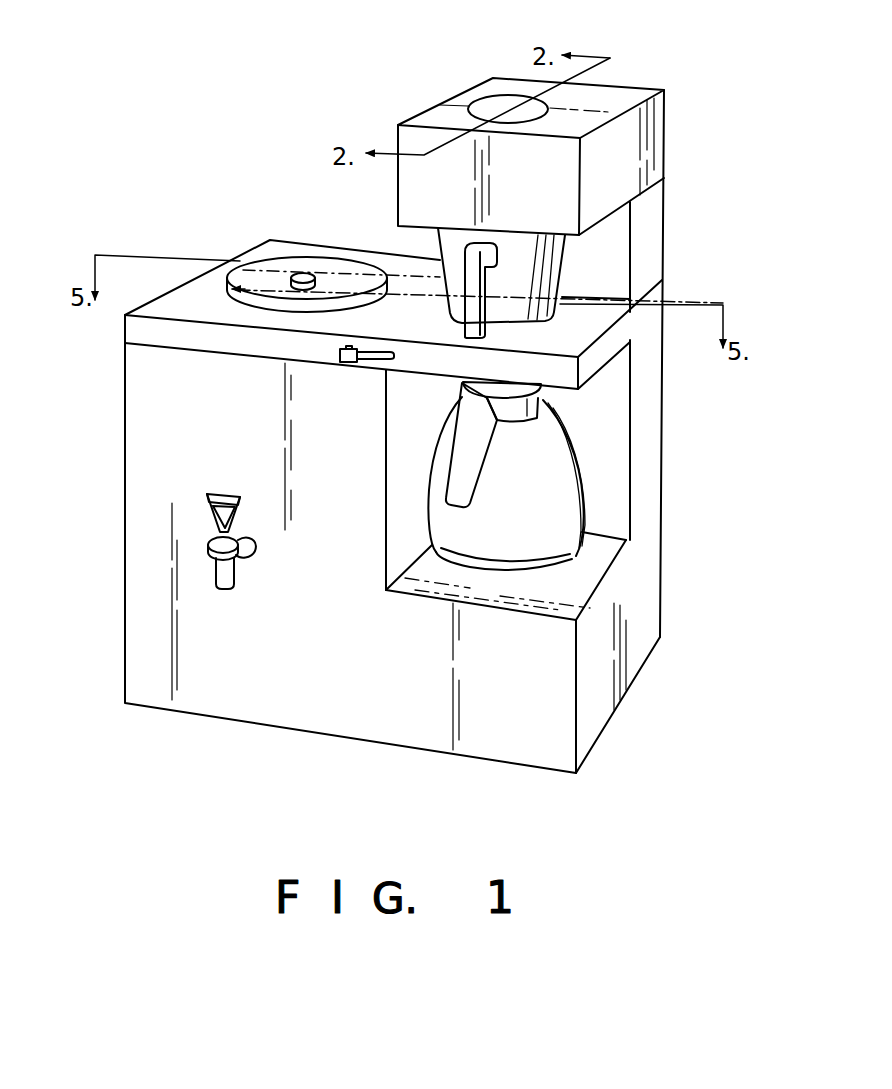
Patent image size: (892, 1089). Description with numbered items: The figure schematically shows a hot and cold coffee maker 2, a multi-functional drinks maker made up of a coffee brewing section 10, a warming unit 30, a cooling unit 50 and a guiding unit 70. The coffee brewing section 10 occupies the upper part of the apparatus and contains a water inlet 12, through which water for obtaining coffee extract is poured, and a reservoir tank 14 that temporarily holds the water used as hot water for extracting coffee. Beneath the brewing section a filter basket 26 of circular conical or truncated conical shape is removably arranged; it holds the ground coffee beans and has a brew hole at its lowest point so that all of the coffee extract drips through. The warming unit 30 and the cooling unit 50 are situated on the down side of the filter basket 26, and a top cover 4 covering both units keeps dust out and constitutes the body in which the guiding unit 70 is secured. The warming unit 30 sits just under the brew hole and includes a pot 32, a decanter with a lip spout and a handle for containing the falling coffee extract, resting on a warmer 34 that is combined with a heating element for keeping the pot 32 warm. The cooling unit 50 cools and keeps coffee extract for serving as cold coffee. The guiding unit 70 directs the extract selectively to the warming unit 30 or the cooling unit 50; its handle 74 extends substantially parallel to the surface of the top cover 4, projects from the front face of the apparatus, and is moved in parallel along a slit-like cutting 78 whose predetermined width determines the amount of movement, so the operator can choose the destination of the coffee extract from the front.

The hot and cold coffee maker 2 is at (331, 228).
The top cover 4 is at (580, 333).
The coffee brewing section 10 is at (612, 275).
The water inlet 12 is at (487, 98).
The reservoir tank 14 is at (658, 122).
The filter basket 26 is at (567, 257).
The warming unit 30 is at (600, 430).
The pot 32 is at (562, 495).
The warmer 34 is at (572, 560).
The cooling unit 50 is at (156, 378).
The guiding unit 70 is at (200, 296).
The handle 74 is at (363, 358).
The slit-like cutting 78 is at (350, 365).